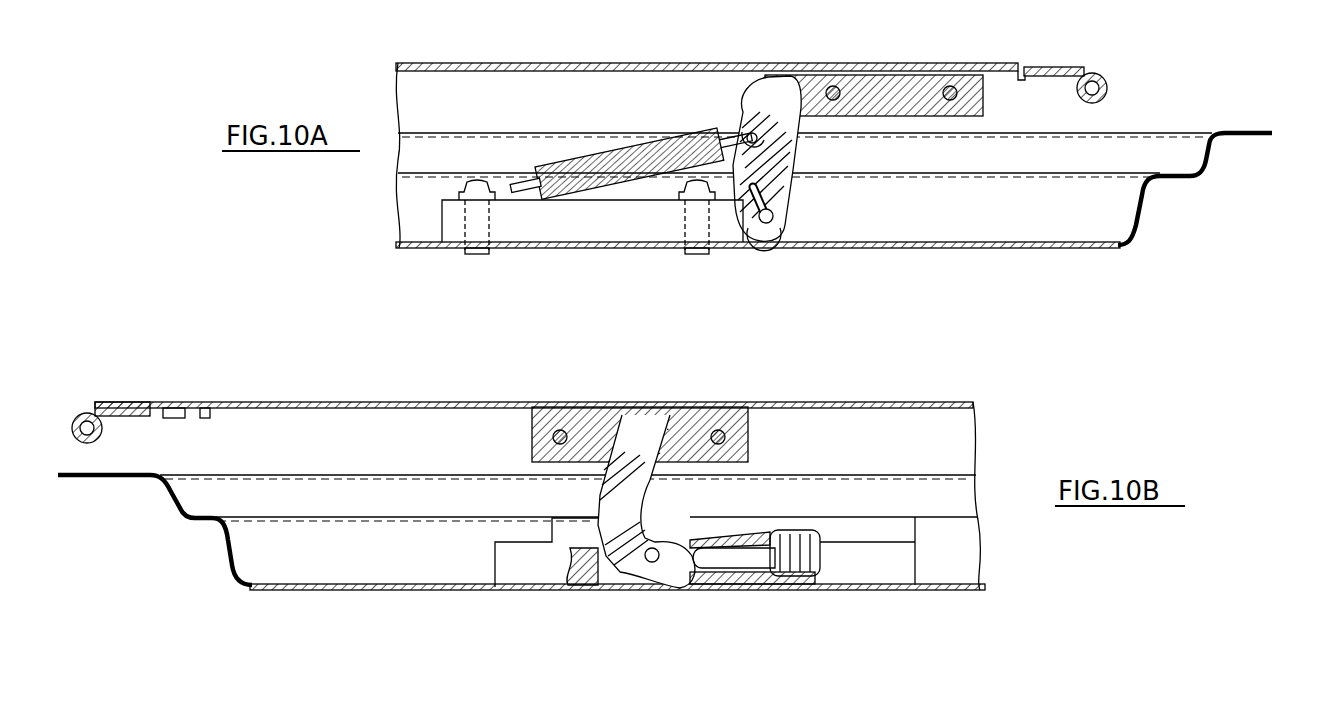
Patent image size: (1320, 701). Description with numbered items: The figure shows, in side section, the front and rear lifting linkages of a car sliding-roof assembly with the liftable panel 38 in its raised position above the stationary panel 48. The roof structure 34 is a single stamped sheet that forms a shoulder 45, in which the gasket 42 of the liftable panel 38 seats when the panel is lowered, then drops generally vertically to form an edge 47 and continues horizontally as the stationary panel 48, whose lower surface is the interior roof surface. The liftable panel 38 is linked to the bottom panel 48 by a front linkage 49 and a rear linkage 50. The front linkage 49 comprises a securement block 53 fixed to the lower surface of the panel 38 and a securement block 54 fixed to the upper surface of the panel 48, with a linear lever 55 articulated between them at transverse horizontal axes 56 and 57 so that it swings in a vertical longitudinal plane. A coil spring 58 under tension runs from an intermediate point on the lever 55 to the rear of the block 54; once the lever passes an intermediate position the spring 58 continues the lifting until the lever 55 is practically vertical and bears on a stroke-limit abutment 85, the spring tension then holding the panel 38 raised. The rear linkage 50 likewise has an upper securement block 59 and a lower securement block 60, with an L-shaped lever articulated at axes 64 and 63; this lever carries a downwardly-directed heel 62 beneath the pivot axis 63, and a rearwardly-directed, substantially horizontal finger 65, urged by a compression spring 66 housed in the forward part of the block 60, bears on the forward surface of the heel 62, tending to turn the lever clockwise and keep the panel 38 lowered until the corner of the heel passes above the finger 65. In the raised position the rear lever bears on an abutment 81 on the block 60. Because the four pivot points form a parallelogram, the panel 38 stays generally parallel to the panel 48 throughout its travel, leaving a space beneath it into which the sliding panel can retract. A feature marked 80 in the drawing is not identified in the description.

In FIG. 10A, the liftable panel 38 is at (600, 60).
In FIG. 10B, the liftable panel 38 is at (456, 400).
In FIG. 10A, the front linkage 49 is at (718, 90).
In FIG. 10A, the transverse horizontal axis 56 is at (780, 87).
In FIG. 10A, the securement block 53 is at (920, 90).
In FIG. 10A, the coil spring 58 is at (592, 150).
In FIG. 10A, the lever 55 is at (750, 112).
In FIG. 10A, the slot 80 is at (798, 173).
In FIG. 10A, the transverse horizontal axis 57 is at (772, 217).
In FIG. 10A, the stroke-limit abutment 85 is at (748, 246).
In FIG. 10A, the securement block 54 is at (555, 222).
In FIG. 10A, the stationary panel 48 is at (968, 243).
In FIG. 10B, the stationary panel 48 is at (398, 590).
In FIG. 10A, the gasket 42 is at (1110, 82).
In FIG. 10A, the roof structure 34 is at (1255, 126).
In FIG. 10B, the roof structure 34 is at (138, 486).
In FIG. 10A, the edge 47 is at (1143, 208).
In FIG. 10B, the edge 47 is at (230, 555).
In FIG. 10B, the shoulder 45 is at (108, 412).
In FIG. 10B, the rear linkage 50 is at (619, 416).
In FIG. 10B, the axis 64 is at (665, 428).
In FIG. 10B, the securement block 59 is at (748, 420).
In FIG. 10B, the heel 62 is at (672, 543).
In FIG. 10B, the finger 65 is at (737, 550).
In FIG. 10B, the compression spring 66 is at (813, 547).
In FIG. 10B, the securement block 60 is at (541, 572).
In FIG. 10B, the abutment 81 is at (600, 580).
In FIG. 10B, the pivot axis 63 is at (652, 560).